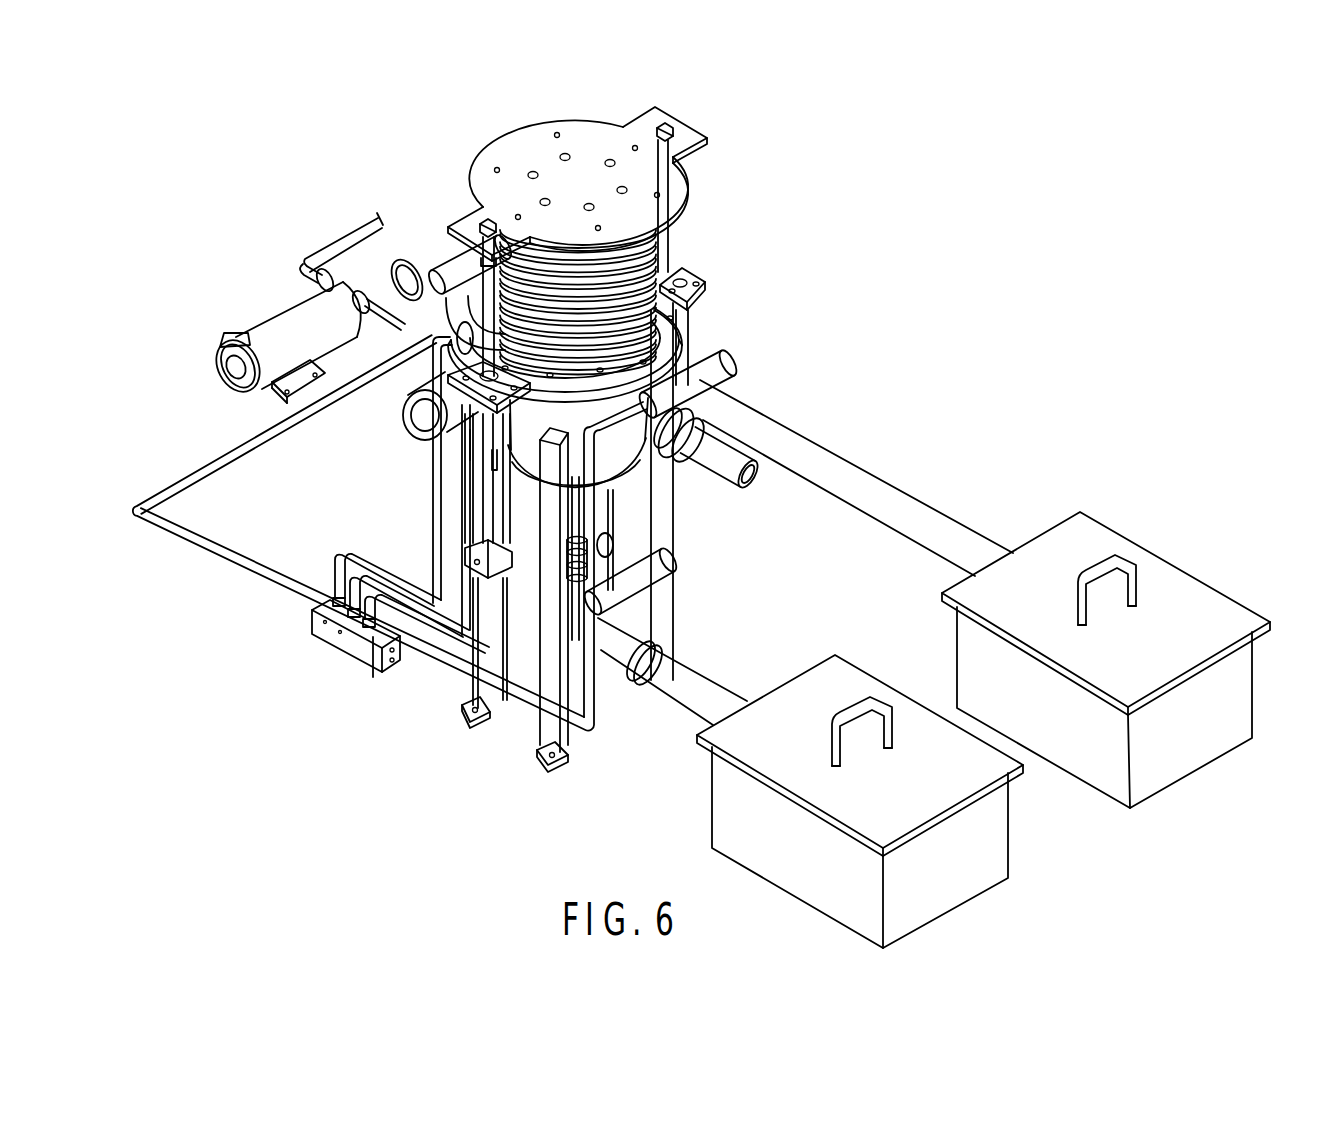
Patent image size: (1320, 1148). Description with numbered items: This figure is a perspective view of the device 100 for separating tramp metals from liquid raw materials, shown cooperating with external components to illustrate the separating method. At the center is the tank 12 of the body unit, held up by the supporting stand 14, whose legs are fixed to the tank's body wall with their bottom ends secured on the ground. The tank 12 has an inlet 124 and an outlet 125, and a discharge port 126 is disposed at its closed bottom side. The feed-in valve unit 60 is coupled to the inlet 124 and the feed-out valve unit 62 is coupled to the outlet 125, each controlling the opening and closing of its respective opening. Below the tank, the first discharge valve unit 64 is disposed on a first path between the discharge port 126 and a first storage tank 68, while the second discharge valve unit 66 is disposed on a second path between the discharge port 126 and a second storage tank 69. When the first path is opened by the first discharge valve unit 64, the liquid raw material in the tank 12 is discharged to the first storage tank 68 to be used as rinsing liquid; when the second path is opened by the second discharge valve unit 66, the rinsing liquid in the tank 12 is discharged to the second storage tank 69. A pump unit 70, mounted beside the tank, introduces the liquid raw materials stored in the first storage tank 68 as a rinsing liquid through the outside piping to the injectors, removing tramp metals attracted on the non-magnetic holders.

The device for separating tramp metals from liquid raw materials 100 is at (507, 126).
The inlet 124 is at (409, 262).
The feed-in valve unit 60 is at (444, 262).
The pump unit 70 is at (281, 318).
The feed-out valve unit 62 is at (735, 360).
The outlet 125 is at (722, 455).
The first discharge valve unit 64 is at (668, 586).
The second storage tank 69 is at (1052, 548).
The first storage tank 68 is at (780, 755).
The second discharge valve unit 66 is at (452, 436).
The tank 12 is at (534, 457).
The discharge port 126 is at (577, 522).
The supporting stand 14 is at (497, 718).